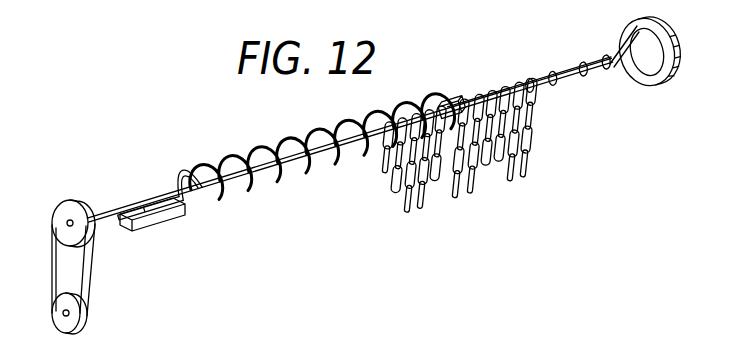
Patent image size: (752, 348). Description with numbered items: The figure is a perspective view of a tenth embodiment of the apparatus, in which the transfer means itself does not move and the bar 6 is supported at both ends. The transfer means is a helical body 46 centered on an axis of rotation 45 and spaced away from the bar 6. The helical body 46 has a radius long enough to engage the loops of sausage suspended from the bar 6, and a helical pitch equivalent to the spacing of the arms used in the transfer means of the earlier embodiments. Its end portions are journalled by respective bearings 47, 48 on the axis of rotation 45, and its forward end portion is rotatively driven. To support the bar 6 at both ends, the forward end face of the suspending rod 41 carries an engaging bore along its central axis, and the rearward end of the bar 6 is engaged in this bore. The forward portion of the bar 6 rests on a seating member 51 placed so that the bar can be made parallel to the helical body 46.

The bar 6 is at (295, 160).
The suspending rod 41 is at (530, 80).
The axis of rotation 45 is at (163, 190).
The helical body 46 is at (284, 141).
The bearing 47 is at (68, 221).
The bearing 48 is at (447, 103).
The seating member 51 is at (163, 224).